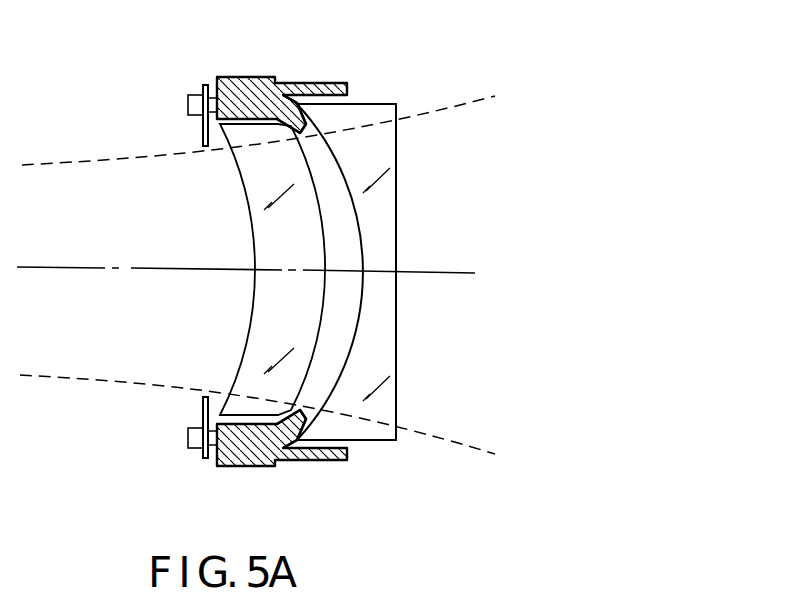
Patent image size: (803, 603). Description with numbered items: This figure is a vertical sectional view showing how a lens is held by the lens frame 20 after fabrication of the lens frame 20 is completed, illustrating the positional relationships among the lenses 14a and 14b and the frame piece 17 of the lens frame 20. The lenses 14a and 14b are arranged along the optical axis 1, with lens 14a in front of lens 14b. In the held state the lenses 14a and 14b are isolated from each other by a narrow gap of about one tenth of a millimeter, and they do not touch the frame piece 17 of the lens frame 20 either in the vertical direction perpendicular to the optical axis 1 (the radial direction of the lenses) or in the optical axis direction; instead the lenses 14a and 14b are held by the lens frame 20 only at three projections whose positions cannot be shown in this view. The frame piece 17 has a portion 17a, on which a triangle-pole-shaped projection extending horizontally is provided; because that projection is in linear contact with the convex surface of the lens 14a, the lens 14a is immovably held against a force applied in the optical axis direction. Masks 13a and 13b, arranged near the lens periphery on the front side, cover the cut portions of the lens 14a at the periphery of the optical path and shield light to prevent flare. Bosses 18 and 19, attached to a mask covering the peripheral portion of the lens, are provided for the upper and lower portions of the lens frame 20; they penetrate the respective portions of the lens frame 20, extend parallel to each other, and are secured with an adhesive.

The optical axis 1 is at (157, 267).
The lens 14a is at (238, 178).
The lens 14b is at (398, 168).
The frame piece 17 is at (256, 78).
The portion of the frame piece 17a is at (287, 112).
The mask 13a is at (205, 84).
The mask 13b is at (203, 404).
The boss 18 is at (188, 105).
The boss 19 is at (192, 440).
The lens frame 20 is at (225, 75).